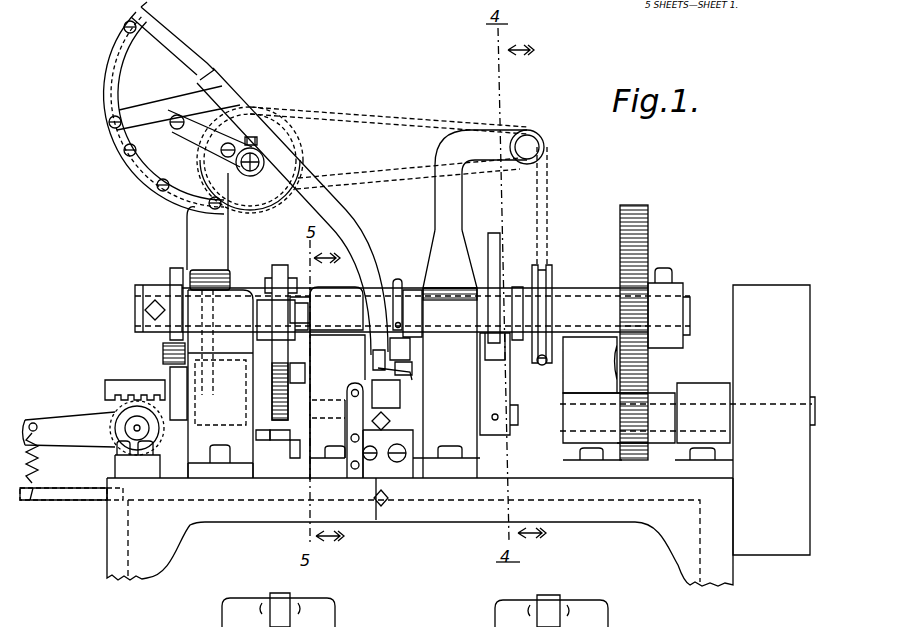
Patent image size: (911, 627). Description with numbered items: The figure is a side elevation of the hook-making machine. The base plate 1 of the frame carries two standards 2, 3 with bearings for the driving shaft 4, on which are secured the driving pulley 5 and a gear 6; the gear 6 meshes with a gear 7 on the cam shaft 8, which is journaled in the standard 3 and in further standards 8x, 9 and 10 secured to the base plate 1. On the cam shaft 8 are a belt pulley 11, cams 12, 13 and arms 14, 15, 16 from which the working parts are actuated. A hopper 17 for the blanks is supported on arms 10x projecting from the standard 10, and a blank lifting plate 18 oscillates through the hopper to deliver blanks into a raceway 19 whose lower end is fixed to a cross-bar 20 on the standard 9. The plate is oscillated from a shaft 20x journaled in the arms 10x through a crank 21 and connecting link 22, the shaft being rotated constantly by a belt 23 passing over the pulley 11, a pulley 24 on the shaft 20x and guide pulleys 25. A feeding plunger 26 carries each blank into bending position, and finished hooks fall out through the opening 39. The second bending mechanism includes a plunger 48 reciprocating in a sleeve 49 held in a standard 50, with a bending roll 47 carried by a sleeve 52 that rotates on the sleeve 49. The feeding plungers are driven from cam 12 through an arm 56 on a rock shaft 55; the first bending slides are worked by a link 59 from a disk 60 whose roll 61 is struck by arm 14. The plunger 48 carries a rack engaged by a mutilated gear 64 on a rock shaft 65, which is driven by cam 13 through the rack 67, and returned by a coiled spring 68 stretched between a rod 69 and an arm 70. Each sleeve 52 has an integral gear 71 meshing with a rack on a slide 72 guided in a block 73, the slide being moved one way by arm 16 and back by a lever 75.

The base plate 1 is at (627, 522).
The standard 2 is at (694, 388).
The standard 3 is at (568, 378).
The driving shaft 4 is at (562, 410).
The driving pulley 5 is at (754, 290).
The gear 6 is at (640, 412).
The gear 7 is at (640, 220).
The cam shaft 8 is at (690, 306).
The standard 8x is at (450, 354).
The standard 9 is at (337, 294).
The standard 10 is at (234, 290).
The arm 10x is at (190, 220).
The belt pulley 11 is at (548, 282).
The cam 12 is at (494, 232).
The cam 13 is at (178, 270).
The arm 14 is at (414, 290).
The arm 15 is at (398, 278).
The arm 16 is at (294, 272).
The hopper 17 is at (156, 40).
The blank lifting plate 18 is at (230, 38).
The raceway 19 is at (236, 100).
The cross-bar 20 is at (364, 353).
The shaft 20x is at (250, 160).
The crank 21 is at (255, 176).
The connecting link 22 is at (190, 130).
The belt 23 is at (372, 106).
The pulley 24 is at (280, 118).
The guide pulley 25 is at (542, 145).
The feeding plunger 26 is at (402, 390).
The opening 39 is at (378, 520).
The bending roll 47 is at (350, 380).
The plunger 48 is at (115, 383).
The sleeve 49 is at (150, 395).
The standard 50 is at (212, 466).
The sleeve 52 is at (337, 413).
The rock shaft 55 is at (510, 418).
The arm 56 is at (495, 384).
The link 59 is at (415, 366).
The disk 60 is at (414, 366).
The roll 61 is at (412, 348).
The mutilated gear 64 is at (118, 450).
The rock shaft 65 is at (135, 432).
The rack 67 is at (162, 356).
The coiled spring 68 is at (36, 460).
The rod 69 is at (62, 498).
The arm 70 is at (63, 418).
The gear 71 is at (275, 436).
The slide 72 is at (262, 440).
The block 73 is at (296, 460).
The lever 75 is at (278, 342).